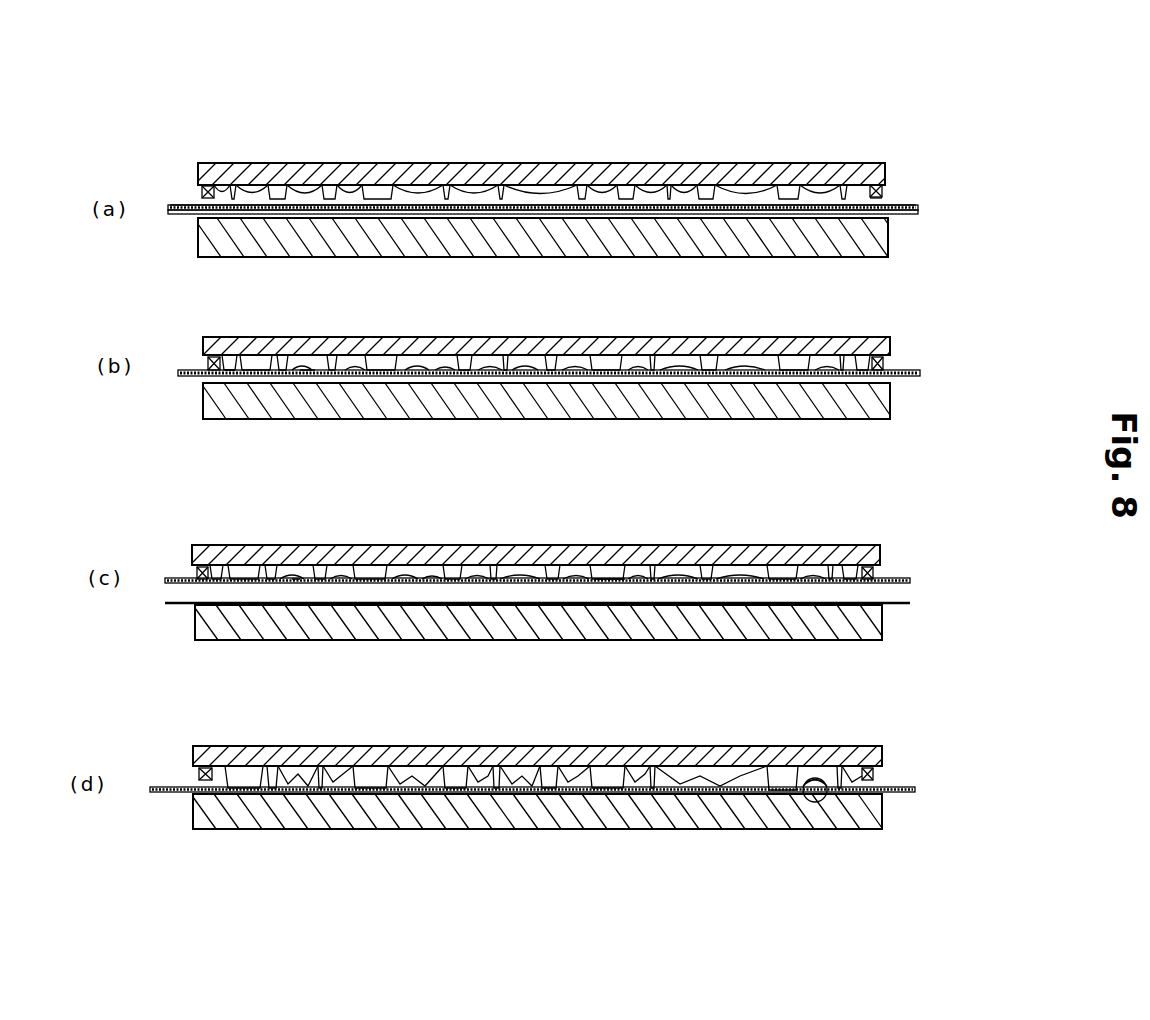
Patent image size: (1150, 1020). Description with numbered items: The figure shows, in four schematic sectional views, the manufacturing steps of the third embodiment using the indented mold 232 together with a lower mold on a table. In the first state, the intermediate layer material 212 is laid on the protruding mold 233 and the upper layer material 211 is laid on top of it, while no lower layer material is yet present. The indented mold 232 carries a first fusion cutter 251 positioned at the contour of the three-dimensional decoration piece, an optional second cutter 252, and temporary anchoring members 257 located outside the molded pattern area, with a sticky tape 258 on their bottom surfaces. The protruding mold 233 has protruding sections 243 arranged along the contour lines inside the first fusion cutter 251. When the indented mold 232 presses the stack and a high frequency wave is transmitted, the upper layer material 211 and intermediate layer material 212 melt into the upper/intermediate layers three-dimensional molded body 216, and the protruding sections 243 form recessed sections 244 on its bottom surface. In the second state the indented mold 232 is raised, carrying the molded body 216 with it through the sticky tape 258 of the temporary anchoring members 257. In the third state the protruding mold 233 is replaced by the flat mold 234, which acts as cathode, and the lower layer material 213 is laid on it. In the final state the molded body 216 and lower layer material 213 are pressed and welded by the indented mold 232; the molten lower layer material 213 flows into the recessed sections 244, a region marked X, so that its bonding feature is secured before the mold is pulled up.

The indented mold 232 is at (851, 150).
The protruding mold 233 is at (888, 245).
The flat mold 234 is at (882, 625).
The first fusion cutter 251 is at (377, 192).
The second cutter 252 is at (245, 196).
The temporary anchoring members 257 is at (884, 189).
The sticky tape 258 is at (880, 199).
The protruding sections 243 is at (481, 212).
The upper layer material 211 is at (918, 206).
The intermediate layer material 212 is at (918, 213).
The upper/intermediate layers three-dimensional molded body 216 is at (920, 372).
The recessed sections 244 is at (345, 374).
The lower layer material 213 is at (910, 603).
The defect portion X is at (815, 802).